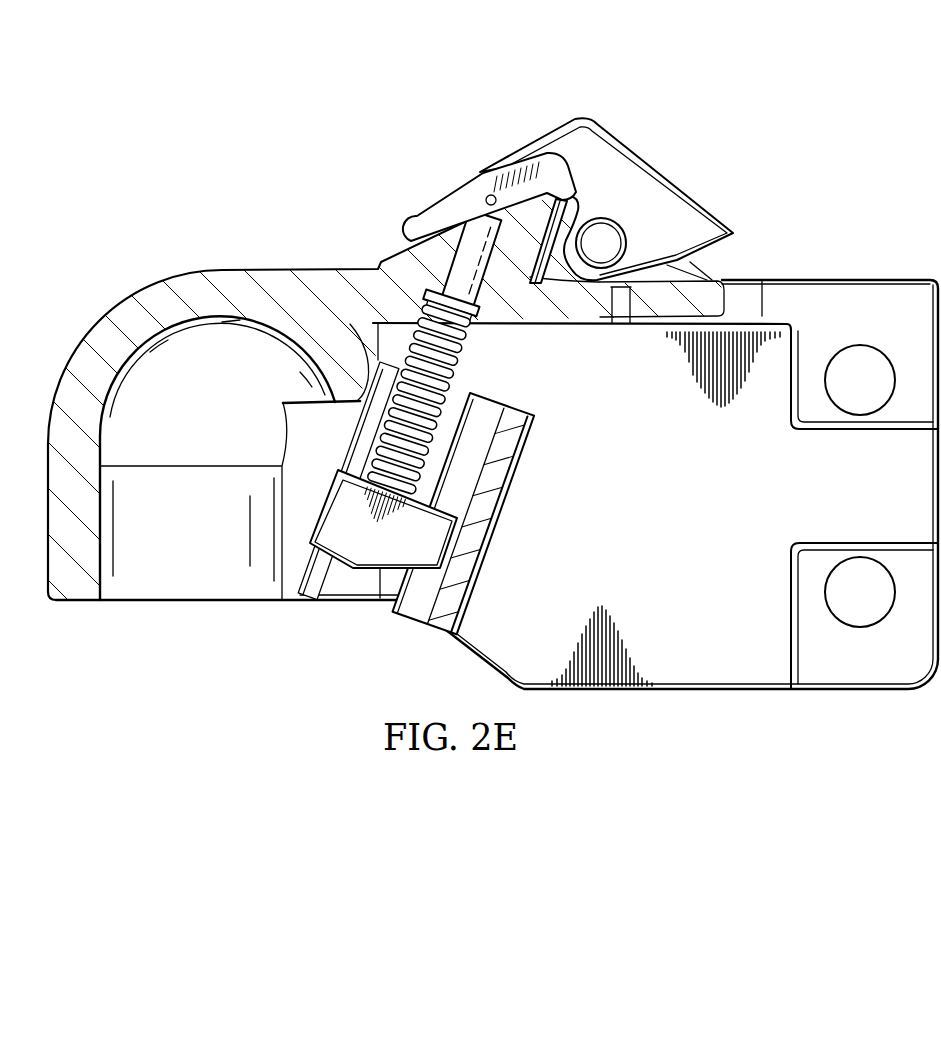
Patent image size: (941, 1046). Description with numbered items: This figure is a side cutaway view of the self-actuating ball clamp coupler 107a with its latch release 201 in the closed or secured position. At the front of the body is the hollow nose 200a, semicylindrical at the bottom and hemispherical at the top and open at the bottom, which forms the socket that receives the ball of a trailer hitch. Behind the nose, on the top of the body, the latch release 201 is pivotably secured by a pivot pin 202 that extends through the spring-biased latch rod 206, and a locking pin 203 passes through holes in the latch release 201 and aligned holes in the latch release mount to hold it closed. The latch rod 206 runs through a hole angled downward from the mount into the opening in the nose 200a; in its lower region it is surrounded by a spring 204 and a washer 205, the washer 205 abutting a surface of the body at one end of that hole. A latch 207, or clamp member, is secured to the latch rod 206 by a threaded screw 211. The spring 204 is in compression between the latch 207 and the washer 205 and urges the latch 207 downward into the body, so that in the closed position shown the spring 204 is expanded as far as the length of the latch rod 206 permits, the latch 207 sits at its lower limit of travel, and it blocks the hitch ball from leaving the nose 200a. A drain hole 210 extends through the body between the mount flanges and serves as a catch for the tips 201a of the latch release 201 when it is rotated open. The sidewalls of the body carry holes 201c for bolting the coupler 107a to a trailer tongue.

The self-actuating ball clamp coupler 107a is at (470, 350).
The nose 200a is at (177, 270).
The threaded screw 211 is at (393, 251).
The latch release 201 is at (606, 177).
The tips 201a is at (462, 234).
The mounting tab 201c is at (836, 369).
The pivot pin 202 is at (489, 195).
The locking pin 203 is at (602, 238).
The spring 204 is at (450, 383).
The washer 205 is at (475, 325).
The latch rod 206 is at (487, 180).
The latch 207 is at (362, 556).
The drain hole 210 is at (625, 315).